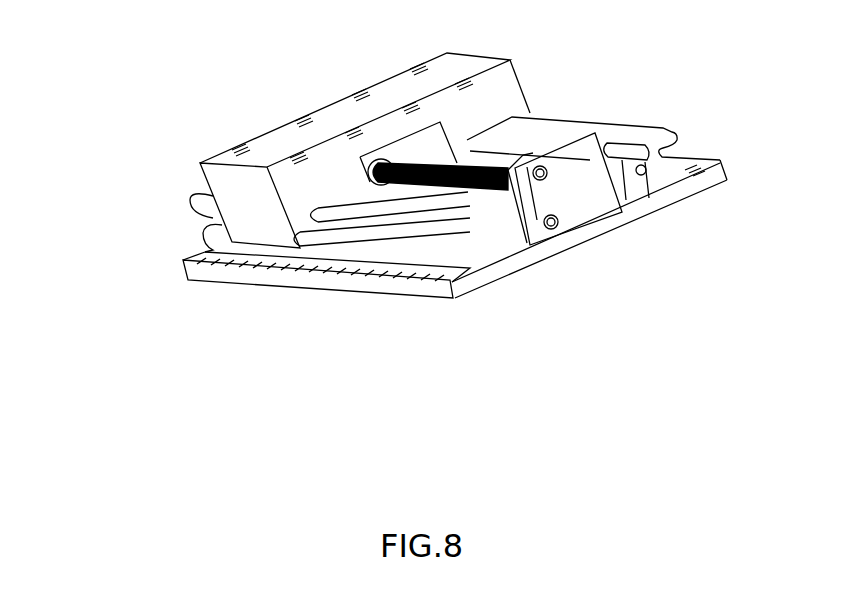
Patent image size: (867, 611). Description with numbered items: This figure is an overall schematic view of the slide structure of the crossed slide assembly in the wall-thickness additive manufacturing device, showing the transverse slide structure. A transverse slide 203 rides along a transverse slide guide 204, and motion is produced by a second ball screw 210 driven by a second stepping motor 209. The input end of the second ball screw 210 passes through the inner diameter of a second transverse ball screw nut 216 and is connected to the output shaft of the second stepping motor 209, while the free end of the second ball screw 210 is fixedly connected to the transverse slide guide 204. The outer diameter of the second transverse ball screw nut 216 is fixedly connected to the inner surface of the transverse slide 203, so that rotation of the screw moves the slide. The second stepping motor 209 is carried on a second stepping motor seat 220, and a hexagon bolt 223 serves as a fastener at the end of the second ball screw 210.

The transverse slide 203 is at (502, 75).
The transverse slide guide 204 is at (622, 133).
The second stepping motor 209 is at (584, 190).
The second ball screw 210 is at (462, 190).
The second transverse ball screw nut 216 is at (382, 185).
The second stepping motor seat 220 is at (535, 231).
The hexagon bolt 223 is at (379, 159).